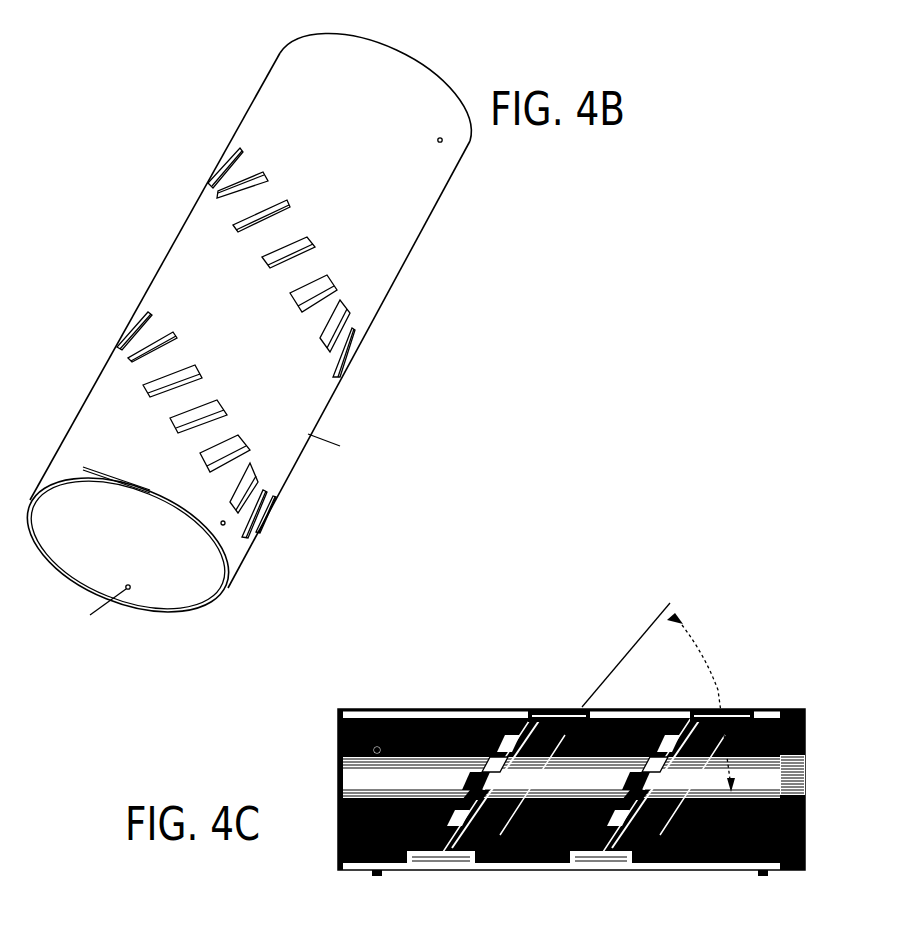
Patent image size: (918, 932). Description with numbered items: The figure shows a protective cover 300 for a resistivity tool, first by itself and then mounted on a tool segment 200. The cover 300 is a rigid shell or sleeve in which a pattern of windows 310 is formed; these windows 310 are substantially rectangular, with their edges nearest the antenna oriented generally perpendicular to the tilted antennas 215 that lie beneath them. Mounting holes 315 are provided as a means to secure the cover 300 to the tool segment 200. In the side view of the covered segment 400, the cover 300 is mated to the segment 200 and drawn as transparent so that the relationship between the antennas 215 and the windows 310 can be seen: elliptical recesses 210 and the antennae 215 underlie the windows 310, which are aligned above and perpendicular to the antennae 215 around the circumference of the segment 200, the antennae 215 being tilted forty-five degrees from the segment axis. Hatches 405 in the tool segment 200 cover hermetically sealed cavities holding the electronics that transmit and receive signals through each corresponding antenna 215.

In FIG. 4C, the tool segment 200 is at (792, 710).
In FIG. 4C, the elliptical recesses 210 is at (626, 787).
In FIG. 4C, the tilted antennas 215 is at (600, 710).
In FIG. 4C, the protective cover 300 is at (376, 708).
In FIG. 4B, the windows 310 is at (215, 178).
In FIG. 4C, the windows 310 is at (520, 712).
In FIG. 4B, the mounting holes 315 is at (442, 143).
In FIG. 4C, the covered segment 400 is at (557, 765).
In FIG. 4C, the hatches 405 is at (563, 862).